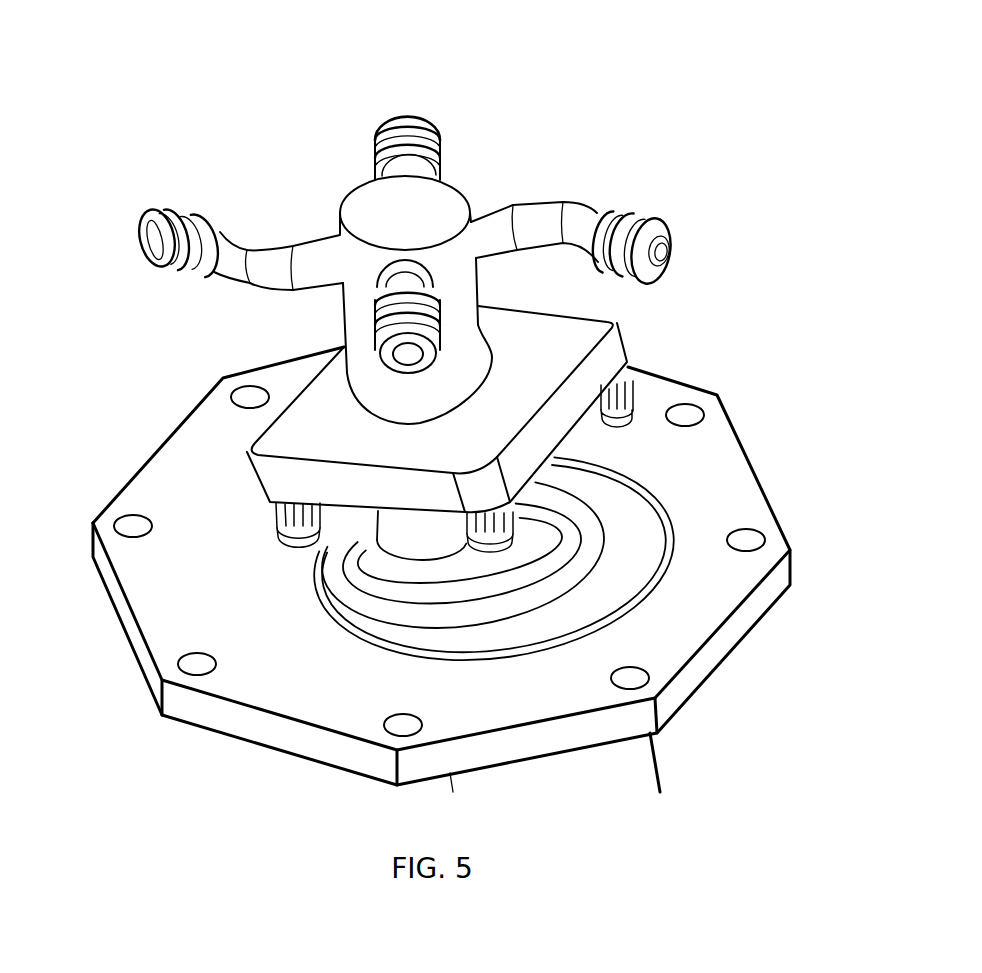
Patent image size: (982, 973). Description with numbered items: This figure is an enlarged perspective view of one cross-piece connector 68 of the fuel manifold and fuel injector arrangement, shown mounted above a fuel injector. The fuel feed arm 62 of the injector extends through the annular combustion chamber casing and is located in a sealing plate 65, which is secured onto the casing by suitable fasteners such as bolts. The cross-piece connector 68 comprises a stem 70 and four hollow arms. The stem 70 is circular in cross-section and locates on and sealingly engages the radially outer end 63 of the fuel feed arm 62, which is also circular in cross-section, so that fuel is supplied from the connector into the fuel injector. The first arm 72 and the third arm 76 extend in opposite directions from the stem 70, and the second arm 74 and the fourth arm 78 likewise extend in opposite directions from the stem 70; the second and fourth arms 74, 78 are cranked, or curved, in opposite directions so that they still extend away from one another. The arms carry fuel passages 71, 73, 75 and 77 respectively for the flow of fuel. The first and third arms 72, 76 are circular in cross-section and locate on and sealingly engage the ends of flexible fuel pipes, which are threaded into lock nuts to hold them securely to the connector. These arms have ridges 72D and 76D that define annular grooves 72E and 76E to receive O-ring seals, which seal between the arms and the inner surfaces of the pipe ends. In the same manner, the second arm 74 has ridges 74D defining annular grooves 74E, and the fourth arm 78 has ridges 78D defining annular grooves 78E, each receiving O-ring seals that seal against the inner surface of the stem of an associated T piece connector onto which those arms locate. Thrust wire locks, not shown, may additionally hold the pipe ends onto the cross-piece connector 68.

The fuel feed arm 62 is at (640, 772).
The radially outer end of the fuel feed arm 63 is at (423, 538).
The sealing plate 65 is at (736, 442).
The cross-piece connector 68 is at (448, 200).
The stem 70 is at (345, 301).
The fuel passage 71 is at (397, 118).
The first arm 72 is at (410, 117).
The ridges 72D is at (441, 148).
The annular grooves 72E is at (374, 158).
The fuel passage 73 is at (142, 242).
The second arm 74 is at (214, 247).
The ridges 74D is at (213, 218).
The annular grooves 74E is at (178, 276).
The fuel passage 75 is at (427, 400).
The third arm 76 is at (415, 349).
The ridges 76D is at (442, 331).
The annular grooves 76E is at (374, 330).
The fuel passage 77 is at (673, 250).
The fourth arm 78 is at (604, 244).
The ridges 78D is at (636, 216).
The annular grooves 78E is at (632, 278).